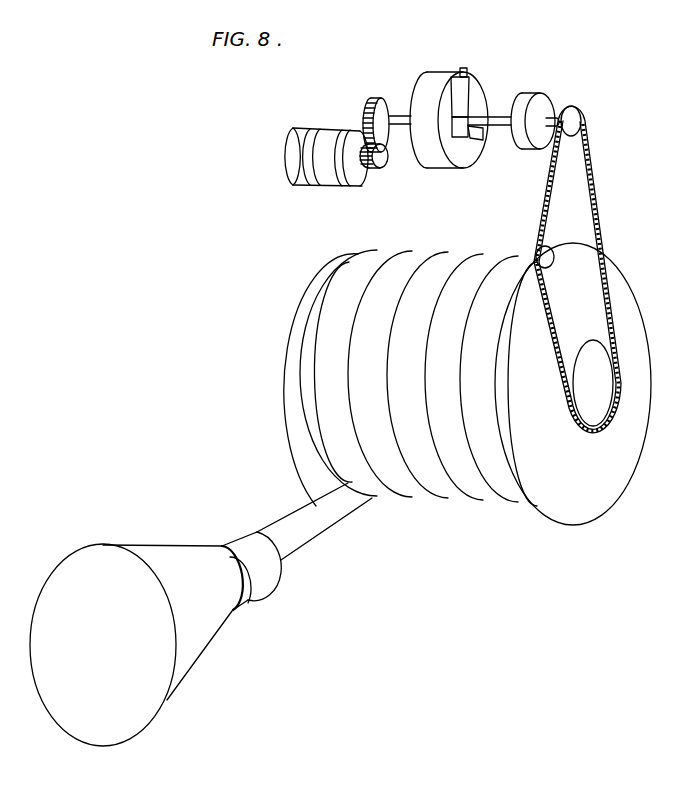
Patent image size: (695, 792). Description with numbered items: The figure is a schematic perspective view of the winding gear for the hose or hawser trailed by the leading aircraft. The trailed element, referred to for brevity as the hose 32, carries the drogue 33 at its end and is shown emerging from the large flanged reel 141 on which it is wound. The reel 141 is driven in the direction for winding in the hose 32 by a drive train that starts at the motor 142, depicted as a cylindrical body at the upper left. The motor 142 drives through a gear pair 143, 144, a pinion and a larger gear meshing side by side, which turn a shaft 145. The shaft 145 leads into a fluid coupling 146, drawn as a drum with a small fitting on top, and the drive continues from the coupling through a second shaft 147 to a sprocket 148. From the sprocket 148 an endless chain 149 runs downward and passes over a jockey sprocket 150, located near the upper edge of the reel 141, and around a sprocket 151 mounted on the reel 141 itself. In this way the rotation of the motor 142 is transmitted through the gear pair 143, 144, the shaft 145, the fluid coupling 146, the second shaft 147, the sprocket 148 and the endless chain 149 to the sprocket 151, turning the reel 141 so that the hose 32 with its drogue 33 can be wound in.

The hose 32 is at (300, 528).
The drogue 33 is at (187, 640).
The reel 141 is at (277, 366).
The motor 142 is at (291, 183).
The gear pair 143 is at (378, 160).
The gear pair 144 is at (368, 112).
The shaft 145 is at (403, 118).
The fluid coupling 146 is at (432, 88).
The second shaft 147 is at (495, 117).
The sprocket 148 is at (573, 130).
The endless chain 149 is at (592, 183).
The jockey sprocket 150 is at (541, 249).
The sprocket 151 is at (590, 362).